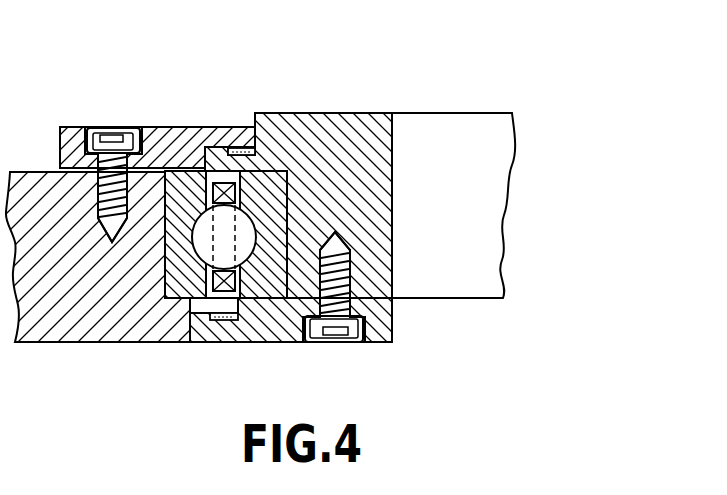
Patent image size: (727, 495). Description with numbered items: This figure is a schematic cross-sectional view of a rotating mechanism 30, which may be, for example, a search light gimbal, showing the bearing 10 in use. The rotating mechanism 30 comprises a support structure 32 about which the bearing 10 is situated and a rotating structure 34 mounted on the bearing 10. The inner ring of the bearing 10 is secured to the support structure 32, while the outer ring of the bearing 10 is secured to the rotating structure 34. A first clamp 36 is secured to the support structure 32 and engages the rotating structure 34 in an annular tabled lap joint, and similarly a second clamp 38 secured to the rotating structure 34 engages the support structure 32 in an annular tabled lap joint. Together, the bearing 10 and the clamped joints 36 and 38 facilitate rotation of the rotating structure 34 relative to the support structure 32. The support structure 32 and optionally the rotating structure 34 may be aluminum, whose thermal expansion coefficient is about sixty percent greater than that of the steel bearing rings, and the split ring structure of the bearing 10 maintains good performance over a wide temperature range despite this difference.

The rotating mechanism 30 is at (98, 86).
The bearing 10 is at (232, 148).
The support structure 32 is at (330, 127).
The rotating structure 34 is at (106, 322).
The first clamp 36 is at (288, 330).
The second clamp 38 is at (153, 131).